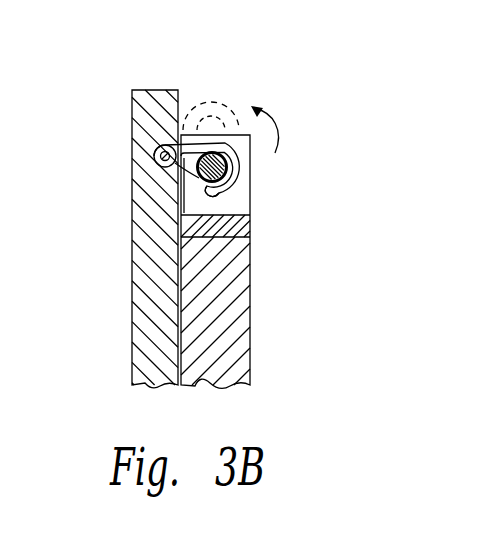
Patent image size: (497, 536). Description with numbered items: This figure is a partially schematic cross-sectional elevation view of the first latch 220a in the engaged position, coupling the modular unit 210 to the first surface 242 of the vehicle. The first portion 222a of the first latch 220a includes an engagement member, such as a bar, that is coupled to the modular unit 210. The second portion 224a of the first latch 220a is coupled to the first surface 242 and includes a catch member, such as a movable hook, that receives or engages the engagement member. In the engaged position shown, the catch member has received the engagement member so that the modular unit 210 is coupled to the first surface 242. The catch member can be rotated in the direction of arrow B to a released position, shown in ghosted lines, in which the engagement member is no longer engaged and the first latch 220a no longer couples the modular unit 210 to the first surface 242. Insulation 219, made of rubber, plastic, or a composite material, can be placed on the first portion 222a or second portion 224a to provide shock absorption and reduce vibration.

The modular unit 210 is at (230, 348).
The insulation 219 is at (170, 167).
The first latch 220a is at (258, 183).
The first portion 222a is at (201, 181).
The second portion 224a is at (222, 195).
The first surface 242 is at (150, 283).
The arrow B is at (281, 122).